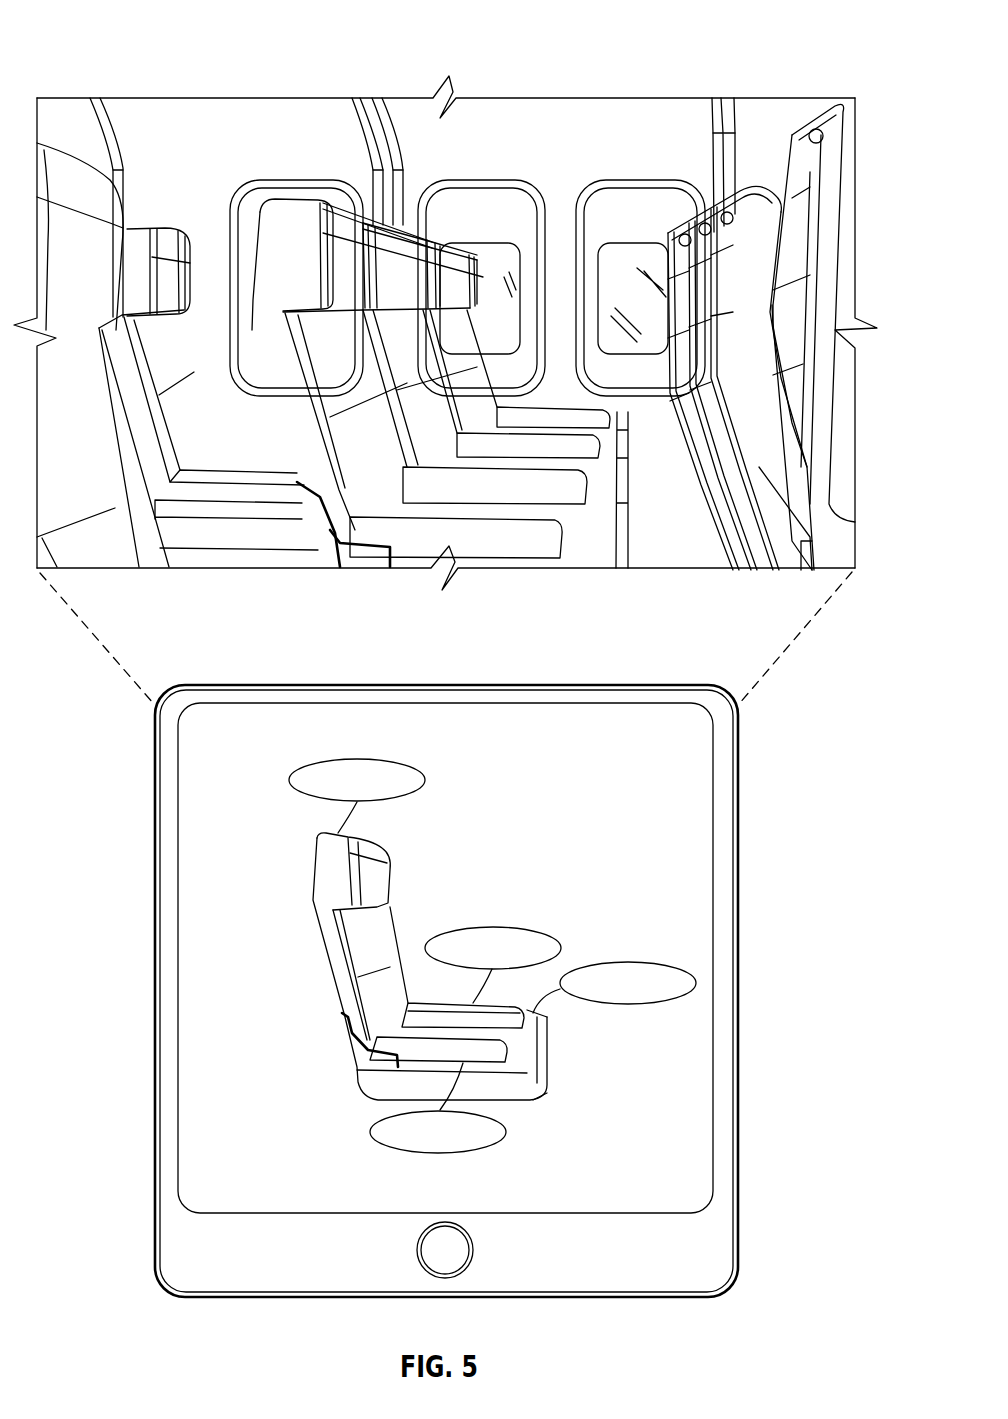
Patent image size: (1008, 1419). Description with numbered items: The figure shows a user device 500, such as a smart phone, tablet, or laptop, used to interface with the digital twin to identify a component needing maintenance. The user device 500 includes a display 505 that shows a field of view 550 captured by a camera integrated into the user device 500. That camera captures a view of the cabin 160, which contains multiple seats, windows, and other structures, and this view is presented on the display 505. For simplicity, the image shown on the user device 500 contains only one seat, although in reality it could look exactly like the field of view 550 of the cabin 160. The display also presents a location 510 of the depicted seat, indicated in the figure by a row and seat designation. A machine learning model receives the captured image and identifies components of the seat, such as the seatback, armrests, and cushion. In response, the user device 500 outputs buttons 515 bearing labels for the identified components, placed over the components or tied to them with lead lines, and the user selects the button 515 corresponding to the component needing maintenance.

The cabin 160 is at (739, 66).
The user device 500 is at (592, 685).
The display 505 is at (179, 945).
The location 510 is at (638, 747).
The buttons 515 is at (357, 758).
The field of view 550 is at (792, 640).